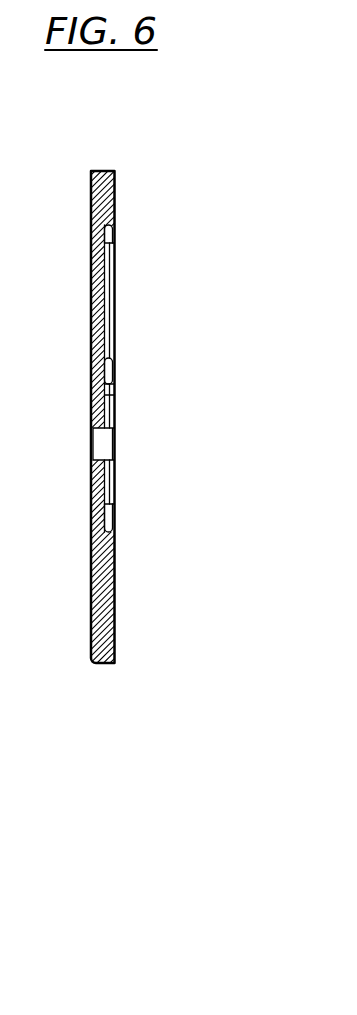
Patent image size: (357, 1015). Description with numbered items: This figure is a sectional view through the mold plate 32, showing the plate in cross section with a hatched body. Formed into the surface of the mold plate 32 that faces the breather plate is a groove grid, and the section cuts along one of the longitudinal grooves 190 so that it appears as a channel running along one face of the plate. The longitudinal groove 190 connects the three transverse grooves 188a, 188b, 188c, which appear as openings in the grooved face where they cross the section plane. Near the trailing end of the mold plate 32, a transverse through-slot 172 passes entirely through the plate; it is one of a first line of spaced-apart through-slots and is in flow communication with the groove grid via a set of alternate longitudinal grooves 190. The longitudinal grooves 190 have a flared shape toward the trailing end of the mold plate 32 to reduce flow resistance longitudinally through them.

The mold plate 32 is at (120, 582).
The transverse through-slot 172 is at (113, 452).
The transverse groove 188a is at (112, 232).
The transverse groove 188b is at (113, 372).
The transverse groove 188c is at (113, 505).
The longitudinal groove 190 is at (113, 300).